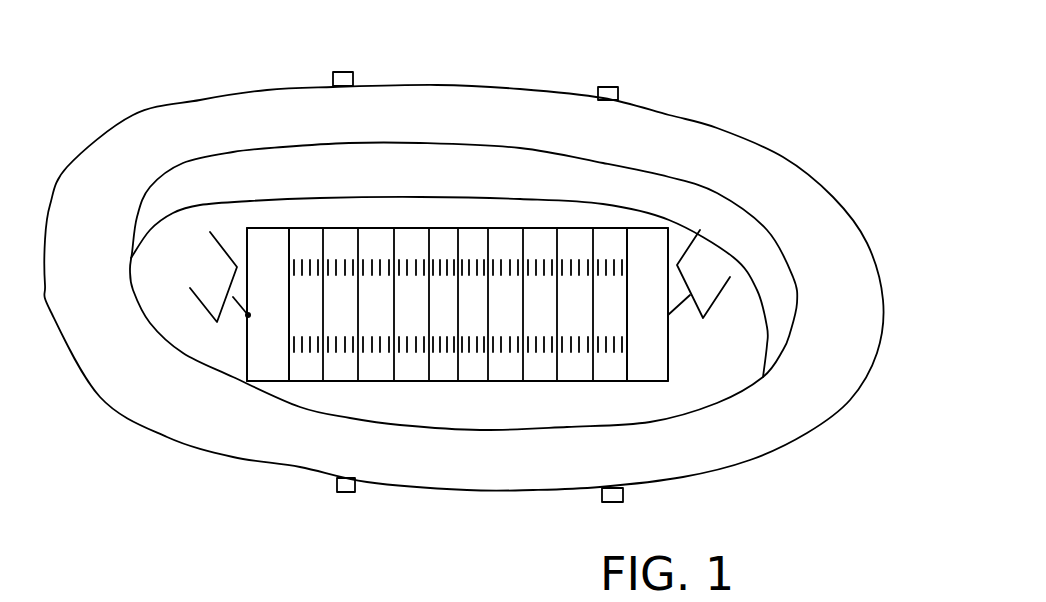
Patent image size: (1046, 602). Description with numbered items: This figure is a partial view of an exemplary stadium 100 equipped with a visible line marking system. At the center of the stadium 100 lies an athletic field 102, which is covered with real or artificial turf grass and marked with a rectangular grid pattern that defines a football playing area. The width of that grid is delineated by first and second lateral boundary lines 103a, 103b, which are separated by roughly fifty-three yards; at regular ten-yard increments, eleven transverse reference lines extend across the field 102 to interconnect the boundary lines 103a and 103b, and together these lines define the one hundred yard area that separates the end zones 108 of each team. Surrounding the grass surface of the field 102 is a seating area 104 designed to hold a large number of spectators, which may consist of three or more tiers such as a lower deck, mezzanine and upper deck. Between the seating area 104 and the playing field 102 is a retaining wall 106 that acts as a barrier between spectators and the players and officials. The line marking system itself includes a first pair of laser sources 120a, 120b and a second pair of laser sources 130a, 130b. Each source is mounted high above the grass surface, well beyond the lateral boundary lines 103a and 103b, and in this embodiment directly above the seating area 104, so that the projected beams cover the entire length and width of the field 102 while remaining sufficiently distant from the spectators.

The stadium 100 is at (757, 140).
The athletic field 102 is at (555, 422).
The first lateral boundary line 103a is at (453, 228).
The second lateral boundary line 103b is at (407, 383).
The seating area 104 is at (463, 287).
The retaining wall 106 is at (640, 190).
The end zone 108 is at (272, 381).
The laser source 120a is at (606, 86).
The laser source 120b is at (613, 502).
The laser source 130a is at (370, 48).
The laser source 130b is at (343, 492).